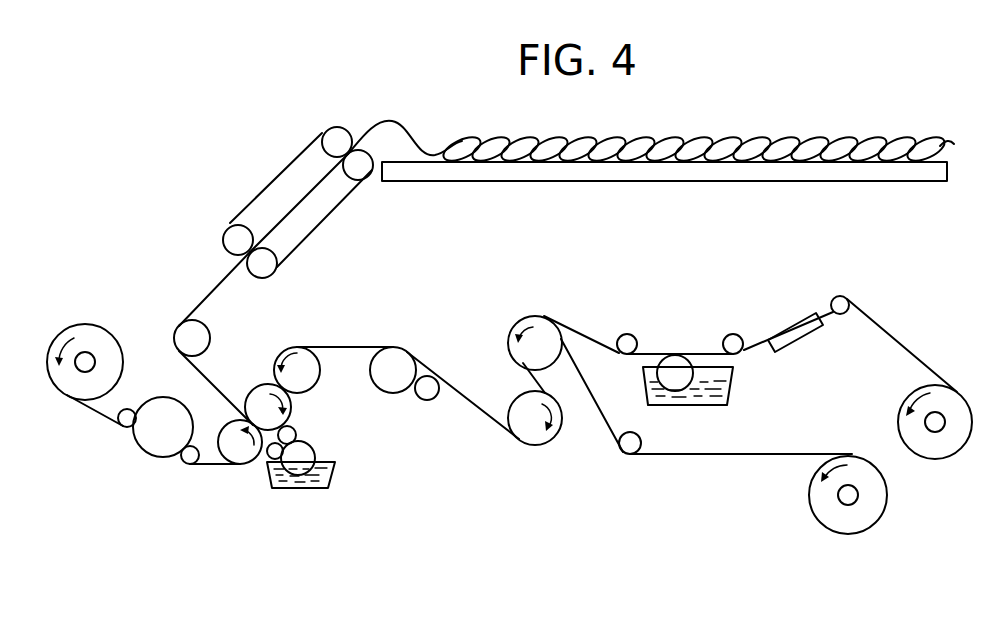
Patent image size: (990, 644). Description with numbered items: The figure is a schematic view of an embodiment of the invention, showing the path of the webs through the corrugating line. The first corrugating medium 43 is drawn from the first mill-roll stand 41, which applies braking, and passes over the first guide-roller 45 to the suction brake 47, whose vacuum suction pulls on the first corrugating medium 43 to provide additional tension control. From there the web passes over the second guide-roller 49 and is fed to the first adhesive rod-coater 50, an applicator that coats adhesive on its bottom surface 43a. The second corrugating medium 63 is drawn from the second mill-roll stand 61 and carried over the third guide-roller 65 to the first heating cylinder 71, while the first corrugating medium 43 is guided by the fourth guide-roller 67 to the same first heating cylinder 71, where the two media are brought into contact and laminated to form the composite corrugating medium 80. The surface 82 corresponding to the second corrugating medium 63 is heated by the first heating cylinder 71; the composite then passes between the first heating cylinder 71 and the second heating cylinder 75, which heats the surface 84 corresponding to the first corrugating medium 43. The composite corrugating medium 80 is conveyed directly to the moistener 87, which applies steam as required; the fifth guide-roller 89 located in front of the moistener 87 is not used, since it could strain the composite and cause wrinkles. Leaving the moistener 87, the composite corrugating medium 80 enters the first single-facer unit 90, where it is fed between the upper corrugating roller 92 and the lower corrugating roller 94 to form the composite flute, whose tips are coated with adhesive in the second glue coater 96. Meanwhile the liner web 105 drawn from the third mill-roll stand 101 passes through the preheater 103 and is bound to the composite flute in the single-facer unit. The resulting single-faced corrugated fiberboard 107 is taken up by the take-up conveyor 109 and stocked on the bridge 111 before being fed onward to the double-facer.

The first mill-roll stand 41 is at (950, 442).
The first corrugating medium 43 is at (894, 337).
The bottom surface 43a is at (636, 357).
The first guide-roller 45 is at (840, 296).
The suction brake 47 is at (797, 332).
The second guide-roller 49 is at (733, 334).
The first adhesive rod-coater 50 is at (733, 389).
The second mill-roll stand 61 is at (853, 520).
The second corrugating medium 63 is at (758, 456).
The third guide-roller 65 is at (625, 455).
The fourth guide-roller 67 is at (627, 333).
The first heating cylinder 71 is at (518, 323).
The second heating cylinder 75 is at (527, 434).
The composite corrugating medium 80 is at (470, 405).
The surface 82 is at (535, 378).
The surface 84 is at (450, 384).
The moistener 87 is at (390, 378).
The fifth guide-roller 89 is at (427, 400).
The first single-facer unit 90 is at (295, 495).
The upper corrugating roller 92 is at (308, 372).
The lower corrugating roller 94 is at (284, 414).
The second glue coater 96 is at (330, 475).
The third mill-roll stand 101 is at (94, 333).
The preheater 103 is at (160, 445).
The liner web 105 is at (213, 467).
The single-faced corrugated fiberboard 107 is at (205, 369).
The take-up conveyor 109 is at (330, 232).
The bridge 111 is at (619, 190).